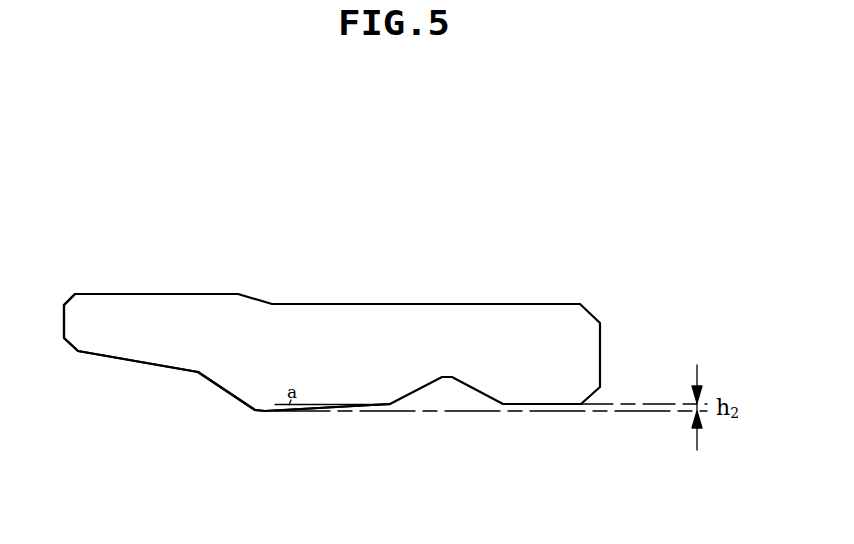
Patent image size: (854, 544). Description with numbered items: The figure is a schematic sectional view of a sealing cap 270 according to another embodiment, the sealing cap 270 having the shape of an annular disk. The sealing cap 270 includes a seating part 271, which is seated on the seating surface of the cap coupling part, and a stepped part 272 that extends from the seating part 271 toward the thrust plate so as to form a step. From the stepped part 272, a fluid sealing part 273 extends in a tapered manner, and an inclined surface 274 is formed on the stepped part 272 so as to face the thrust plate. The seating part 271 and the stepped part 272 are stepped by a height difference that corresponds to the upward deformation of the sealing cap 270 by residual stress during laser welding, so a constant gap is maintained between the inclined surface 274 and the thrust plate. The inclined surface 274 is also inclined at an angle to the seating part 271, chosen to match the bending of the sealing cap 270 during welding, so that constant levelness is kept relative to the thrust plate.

The sealing cap 270 is at (403, 157).
The seating part 271 is at (542, 388).
The stepped part 272 is at (257, 400).
The fluid sealing part 273 is at (133, 359).
The inclined surface 274 is at (263, 412).